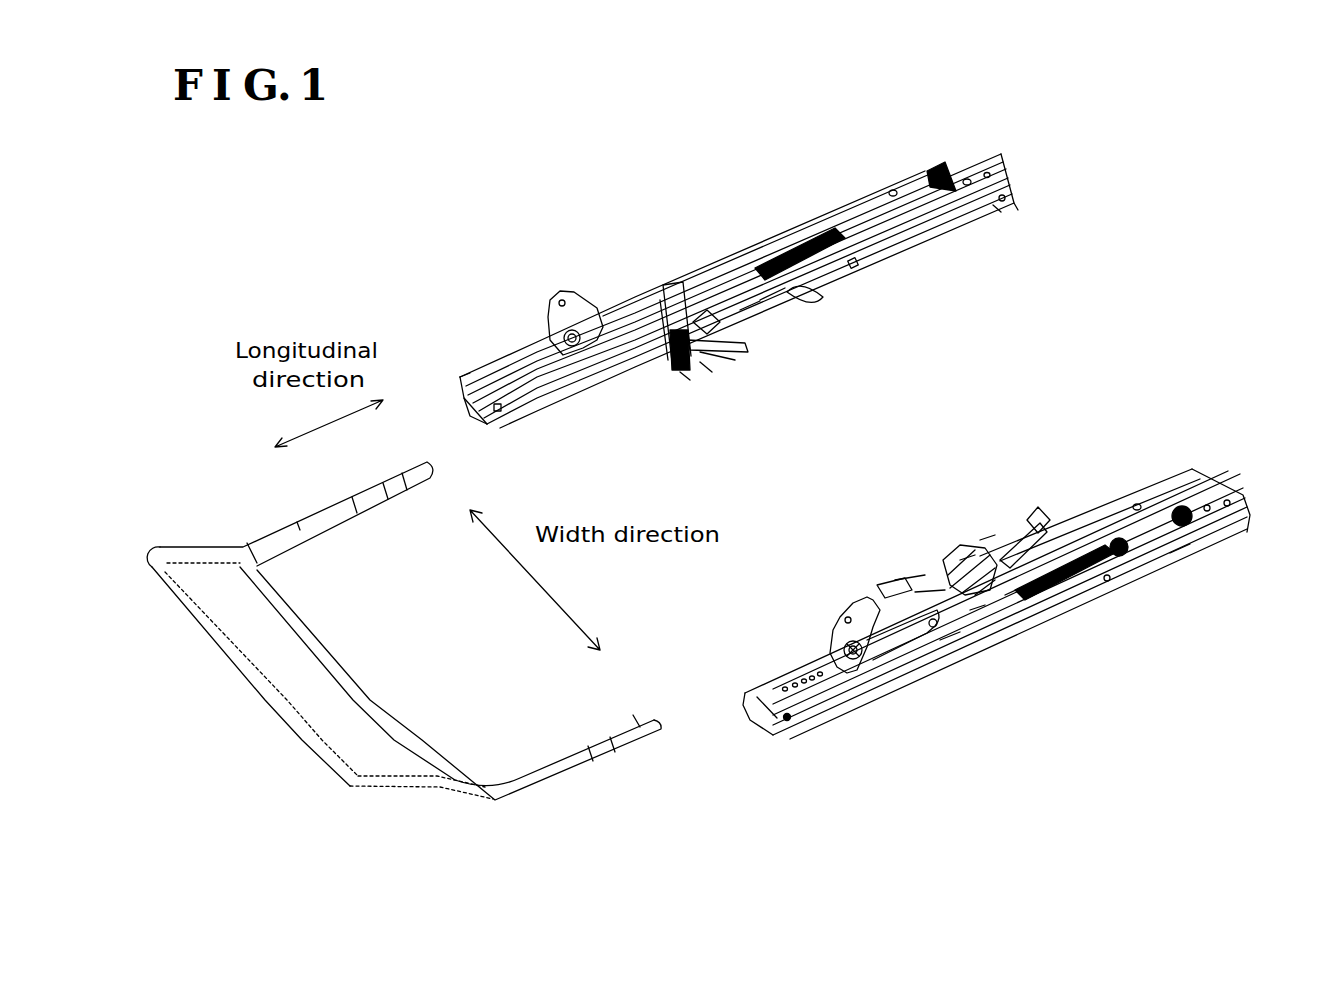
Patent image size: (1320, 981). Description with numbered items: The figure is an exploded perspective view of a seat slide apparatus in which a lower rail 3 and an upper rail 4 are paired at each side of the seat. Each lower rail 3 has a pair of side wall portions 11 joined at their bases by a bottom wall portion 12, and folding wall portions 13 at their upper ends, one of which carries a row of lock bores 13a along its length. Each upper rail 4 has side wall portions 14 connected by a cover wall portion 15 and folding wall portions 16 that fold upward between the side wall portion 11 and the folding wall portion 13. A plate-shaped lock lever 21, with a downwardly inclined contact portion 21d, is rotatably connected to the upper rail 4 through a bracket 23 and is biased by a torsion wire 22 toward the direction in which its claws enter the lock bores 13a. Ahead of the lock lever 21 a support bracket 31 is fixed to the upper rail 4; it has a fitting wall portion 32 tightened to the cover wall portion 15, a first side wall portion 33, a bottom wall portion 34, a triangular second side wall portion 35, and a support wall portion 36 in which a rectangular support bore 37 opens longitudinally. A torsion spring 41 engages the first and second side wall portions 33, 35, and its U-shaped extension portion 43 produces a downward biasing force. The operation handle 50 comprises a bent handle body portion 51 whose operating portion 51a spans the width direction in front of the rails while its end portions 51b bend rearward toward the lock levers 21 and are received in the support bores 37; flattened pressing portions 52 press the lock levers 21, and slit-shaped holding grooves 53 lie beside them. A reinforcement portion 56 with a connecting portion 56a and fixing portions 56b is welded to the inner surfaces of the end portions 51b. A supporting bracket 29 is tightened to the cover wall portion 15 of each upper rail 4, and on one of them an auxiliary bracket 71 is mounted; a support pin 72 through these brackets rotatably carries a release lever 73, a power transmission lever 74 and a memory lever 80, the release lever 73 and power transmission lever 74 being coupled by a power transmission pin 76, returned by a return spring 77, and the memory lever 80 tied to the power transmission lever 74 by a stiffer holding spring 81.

The lower rail 3 is at (890, 257).
The upper rail 4 is at (942, 233).
The side wall portion 11 is at (458, 385).
The bottom wall portion 12 is at (476, 421).
The folding wall portion 13 is at (474, 372).
The lock bore 13a is at (785, 672).
The side wall portion 14 is at (1005, 193).
The cover wall portion 15 is at (992, 176).
The folding wall portion 16 is at (998, 217).
The lock lever 21 is at (798, 300).
The contact portion 21d is at (850, 276).
The torsion wire 22 is at (781, 313).
The bracket 23 is at (812, 243).
The supporting bracket 29 is at (858, 202).
The support bracket 31 is at (697, 284).
The fitting wall portion 32 is at (668, 298).
The first side wall portion 33 is at (727, 322).
The bottom wall portion 34 is at (742, 347).
The second side wall portion 35 is at (716, 366).
The support wall portion 36 is at (687, 381).
The support bore 37 is at (668, 372).
The torsion spring 41 is at (702, 385).
The extension portion 43 is at (736, 363).
The operation handle 50 is at (265, 705).
The handle body portion 51 is at (190, 613).
The operating portion 51a is at (238, 652).
The end portion 51b is at (302, 517).
The pressing portion 52 is at (407, 466).
The holding groove 53 is at (357, 497).
The reinforcement portion 56 is at (264, 597).
The connecting portion 56a is at (318, 648).
The fixing portion 56b is at (287, 549).
The auxiliary bracket 71 is at (1041, 522).
The support pin 72 is at (948, 648).
The release lever 73 is at (987, 530).
The power transmission lever 74 is at (1012, 536).
The power transmission pin 76 is at (1015, 608).
The return spring 77 is at (963, 543).
The memory lever 80 is at (980, 618).
The holding spring 81 is at (943, 577).